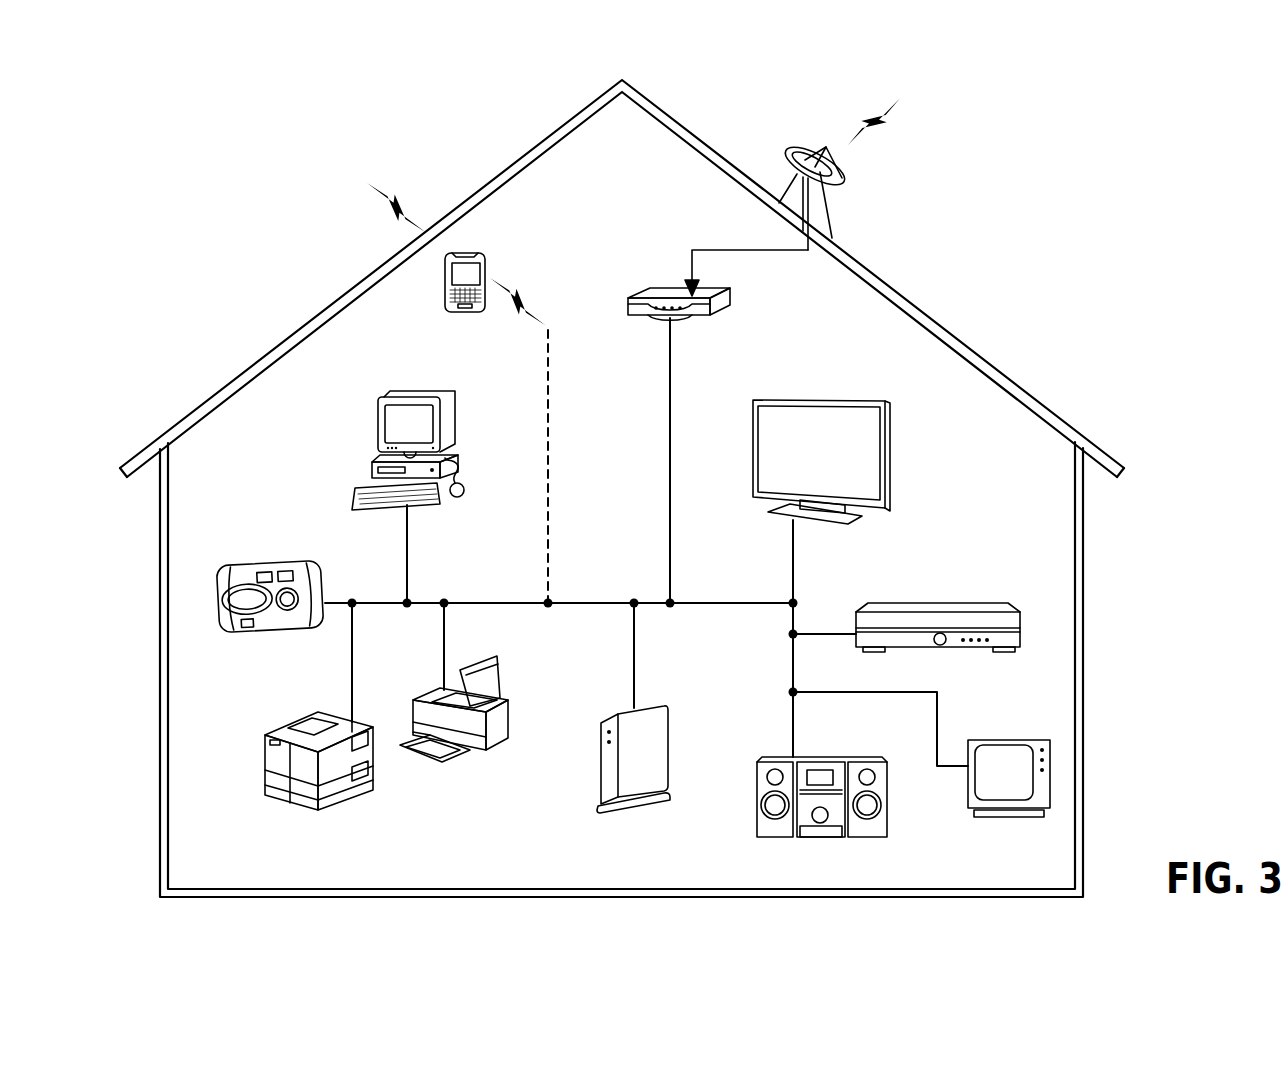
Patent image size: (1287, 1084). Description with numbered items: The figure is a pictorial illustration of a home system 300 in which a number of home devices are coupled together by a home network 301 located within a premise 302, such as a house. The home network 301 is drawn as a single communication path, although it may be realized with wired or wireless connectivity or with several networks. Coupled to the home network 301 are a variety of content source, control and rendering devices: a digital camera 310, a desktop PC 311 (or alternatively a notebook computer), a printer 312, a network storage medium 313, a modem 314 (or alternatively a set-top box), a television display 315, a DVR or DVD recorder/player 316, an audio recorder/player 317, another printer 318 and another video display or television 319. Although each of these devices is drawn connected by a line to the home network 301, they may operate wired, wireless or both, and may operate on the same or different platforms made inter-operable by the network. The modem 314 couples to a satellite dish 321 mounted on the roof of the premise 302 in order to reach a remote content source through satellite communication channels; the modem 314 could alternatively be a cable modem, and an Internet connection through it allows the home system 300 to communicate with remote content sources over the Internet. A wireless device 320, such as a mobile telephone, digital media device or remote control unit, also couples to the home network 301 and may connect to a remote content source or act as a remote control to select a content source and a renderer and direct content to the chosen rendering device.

The home system 300 is at (1024, 237).
The home network 301 is at (514, 606).
The premise 302 is at (1046, 404).
The digital camera 310 is at (247, 622).
The desktop PC 311 is at (393, 396).
The printer 312 is at (424, 690).
The network storage medium 313 is at (638, 815).
The modem 314 is at (734, 304).
The television display 315 is at (893, 482).
The DVR or DVD recorder/player 316 is at (952, 652).
The audio recorder/player 317 is at (872, 757).
The printer 318 is at (330, 812).
The video display or television 319 is at (1002, 820).
The wireless device 320 is at (445, 288).
The satellite dish 321 is at (843, 180).